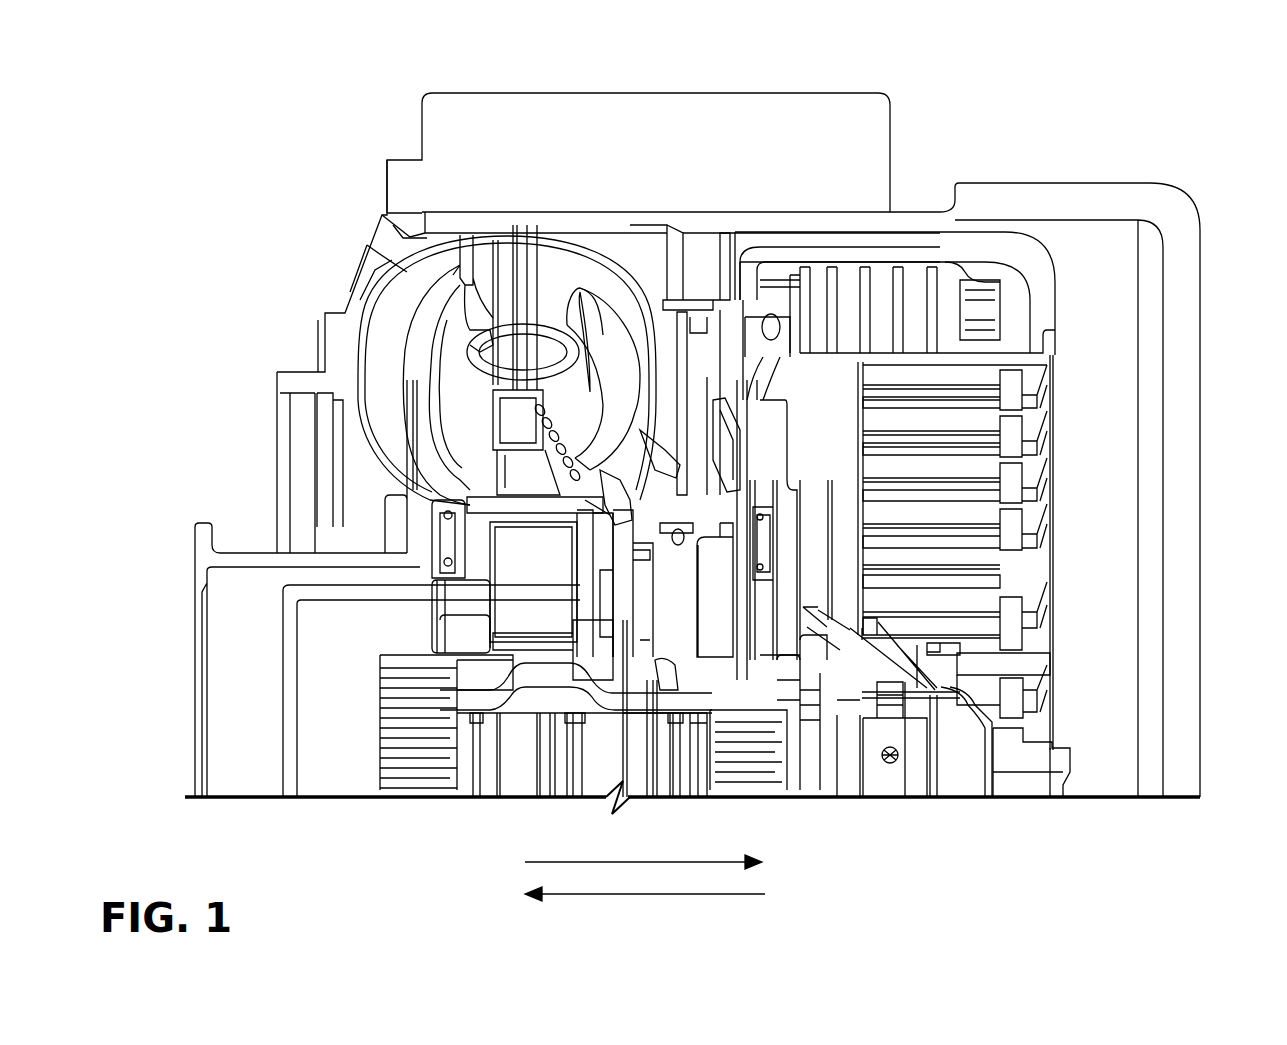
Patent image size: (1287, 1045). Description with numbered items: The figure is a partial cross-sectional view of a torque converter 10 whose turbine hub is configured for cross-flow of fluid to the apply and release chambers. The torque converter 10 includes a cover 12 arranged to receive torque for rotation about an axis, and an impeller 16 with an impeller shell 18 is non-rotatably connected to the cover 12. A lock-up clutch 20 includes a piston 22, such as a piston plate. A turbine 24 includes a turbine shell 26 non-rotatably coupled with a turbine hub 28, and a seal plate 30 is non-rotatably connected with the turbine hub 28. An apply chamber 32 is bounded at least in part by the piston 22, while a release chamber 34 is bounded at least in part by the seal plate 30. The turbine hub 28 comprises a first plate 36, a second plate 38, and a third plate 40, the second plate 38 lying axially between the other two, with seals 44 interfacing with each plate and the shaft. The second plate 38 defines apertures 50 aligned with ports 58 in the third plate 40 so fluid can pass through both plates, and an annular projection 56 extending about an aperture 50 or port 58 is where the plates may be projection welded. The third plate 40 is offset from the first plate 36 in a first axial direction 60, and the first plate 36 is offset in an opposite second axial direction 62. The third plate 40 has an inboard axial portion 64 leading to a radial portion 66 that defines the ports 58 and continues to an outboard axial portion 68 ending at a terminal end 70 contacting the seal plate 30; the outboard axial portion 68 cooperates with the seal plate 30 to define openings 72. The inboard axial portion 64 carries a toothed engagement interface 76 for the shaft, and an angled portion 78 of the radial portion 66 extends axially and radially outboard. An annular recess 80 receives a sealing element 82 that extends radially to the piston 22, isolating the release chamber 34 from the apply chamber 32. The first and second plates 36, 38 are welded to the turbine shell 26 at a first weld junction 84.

The torque converter 10 is at (952, 78).
The cover 12 is at (1094, 192).
The impeller 16 is at (362, 298).
The impeller shell 18 is at (370, 268).
The lock-up clutch 20 is at (881, 273).
The piston 22 is at (733, 365).
The turbine 24 is at (612, 230).
The turbine shell 26 is at (638, 285).
The turbine hub 28 is at (620, 617).
The seal plate 30 is at (740, 592).
The apply chamber 32 is at (650, 490).
The release chamber 34 is at (689, 526).
The first plate 36 is at (660, 655).
The second plate 38 is at (655, 665).
The third plate 40 is at (730, 692).
The seals 44 is at (477, 763).
The apertures 50 is at (655, 595).
The annular projection 56 is at (665, 470).
The ports 58 is at (677, 600).
The first axial direction 60 is at (530, 848).
The second axial direction 62 is at (570, 900).
The inboard axial portion 64 is at (772, 700).
The radial portion 66 is at (800, 660).
The outboard axial portion 68 is at (693, 523).
The terminal end 70 is at (735, 540).
The openings 72 is at (845, 683).
The engagement interface 76 is at (782, 703).
The angled portion 78 is at (673, 670).
The annular recess 80 is at (688, 520).
The sealing element 82 is at (622, 520).
The first weld junction 84 is at (620, 552).